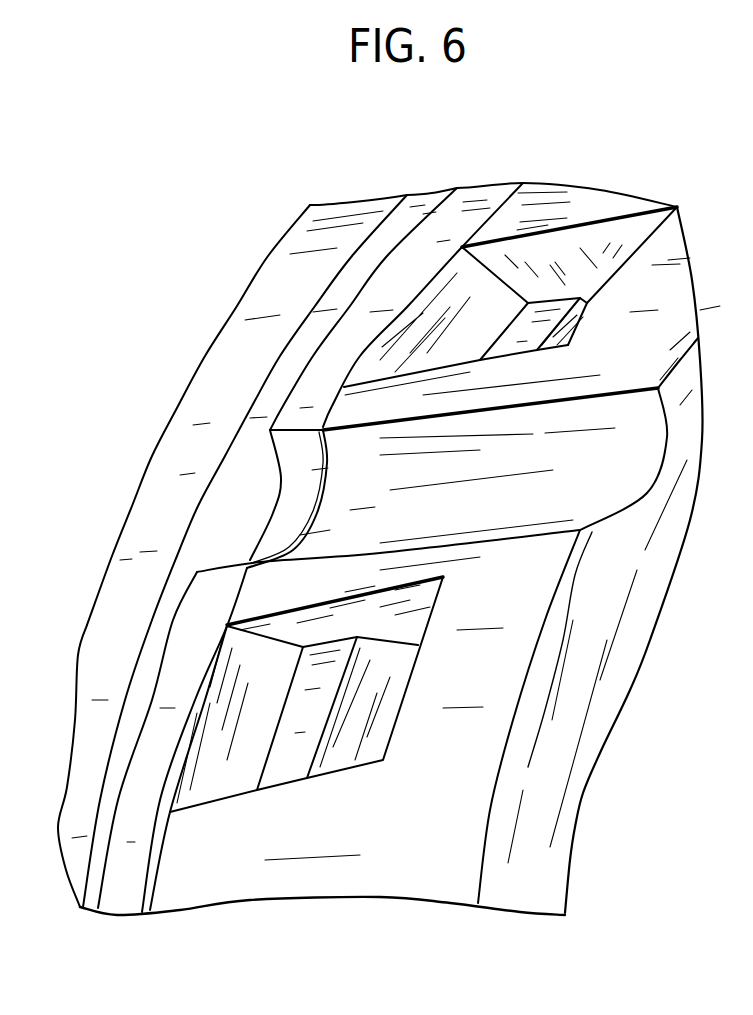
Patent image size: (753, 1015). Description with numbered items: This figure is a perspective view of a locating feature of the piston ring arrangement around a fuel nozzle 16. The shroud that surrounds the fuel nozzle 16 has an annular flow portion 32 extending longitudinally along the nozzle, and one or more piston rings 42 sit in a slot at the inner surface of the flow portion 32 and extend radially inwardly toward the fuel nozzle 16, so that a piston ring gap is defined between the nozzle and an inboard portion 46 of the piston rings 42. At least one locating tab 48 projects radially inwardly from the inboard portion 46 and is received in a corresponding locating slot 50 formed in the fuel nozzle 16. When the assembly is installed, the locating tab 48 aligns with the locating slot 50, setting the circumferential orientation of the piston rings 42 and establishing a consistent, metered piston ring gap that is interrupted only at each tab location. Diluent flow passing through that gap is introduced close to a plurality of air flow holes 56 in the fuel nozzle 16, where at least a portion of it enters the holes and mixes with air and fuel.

The fuel nozzle 16 is at (190, 893).
The flow portion 32 is at (342, 212).
The piston ring 42 is at (120, 745).
The inboard portion 46 is at (160, 667).
The locating tab 48 is at (233, 456).
The locating slot 50 is at (267, 540).
The air flow hole 56 is at (615, 228).